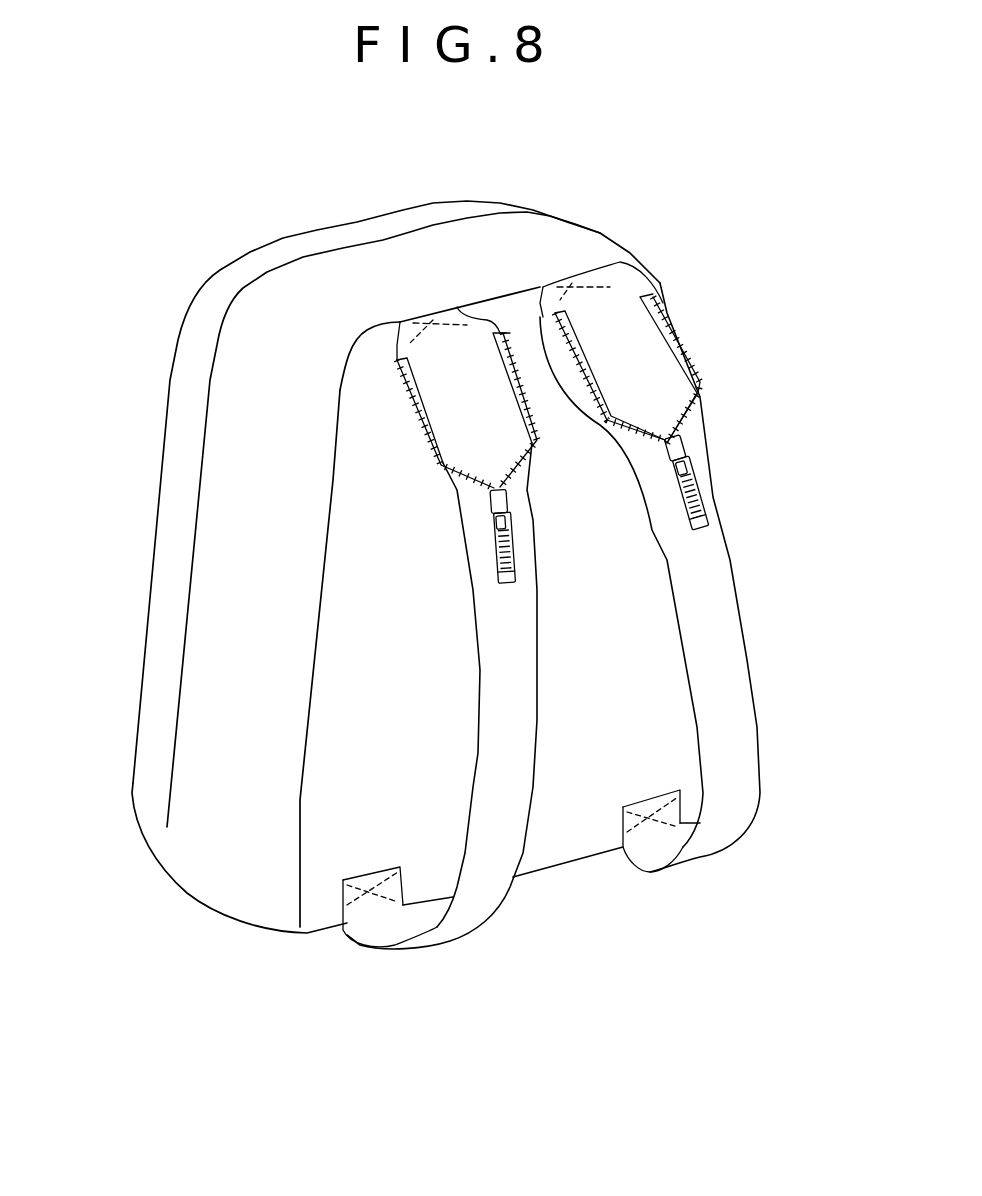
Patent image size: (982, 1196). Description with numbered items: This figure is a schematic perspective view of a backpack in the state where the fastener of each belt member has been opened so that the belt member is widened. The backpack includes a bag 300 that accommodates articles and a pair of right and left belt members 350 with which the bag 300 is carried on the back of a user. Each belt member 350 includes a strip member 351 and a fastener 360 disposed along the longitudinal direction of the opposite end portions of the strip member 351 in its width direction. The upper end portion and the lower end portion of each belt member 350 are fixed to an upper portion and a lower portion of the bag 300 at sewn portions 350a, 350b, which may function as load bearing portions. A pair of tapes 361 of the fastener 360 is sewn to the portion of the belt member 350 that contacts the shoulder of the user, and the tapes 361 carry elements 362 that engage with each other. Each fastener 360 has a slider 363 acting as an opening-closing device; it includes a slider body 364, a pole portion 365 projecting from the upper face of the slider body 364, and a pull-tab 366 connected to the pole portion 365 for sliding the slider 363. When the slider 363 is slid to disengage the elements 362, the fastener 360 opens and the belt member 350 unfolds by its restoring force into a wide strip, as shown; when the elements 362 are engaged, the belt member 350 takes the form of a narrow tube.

The bag 300 is at (185, 303).
The belt member 350 is at (478, 672).
The sewn portion 350a is at (447, 325).
The sewn portion 350b is at (387, 893).
The strip member 351 is at (480, 435).
The fastener 360 is at (519, 557).
The tape 361 is at (430, 402).
The element 362 is at (393, 380).
The slider 363 is at (489, 510).
The slider body 364 is at (492, 500).
The pole portion 365 is at (507, 497).
The pull-tab 366 is at (513, 520).